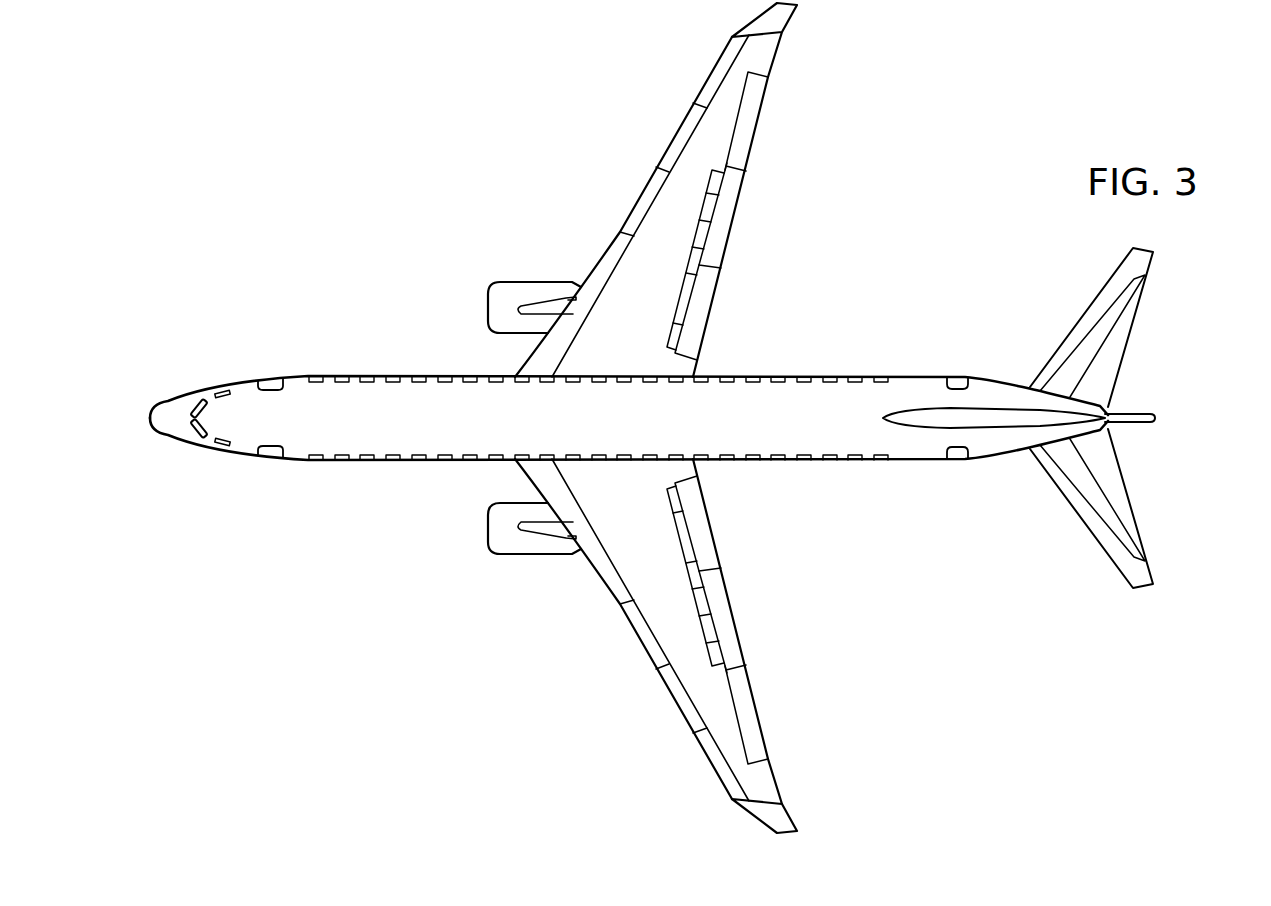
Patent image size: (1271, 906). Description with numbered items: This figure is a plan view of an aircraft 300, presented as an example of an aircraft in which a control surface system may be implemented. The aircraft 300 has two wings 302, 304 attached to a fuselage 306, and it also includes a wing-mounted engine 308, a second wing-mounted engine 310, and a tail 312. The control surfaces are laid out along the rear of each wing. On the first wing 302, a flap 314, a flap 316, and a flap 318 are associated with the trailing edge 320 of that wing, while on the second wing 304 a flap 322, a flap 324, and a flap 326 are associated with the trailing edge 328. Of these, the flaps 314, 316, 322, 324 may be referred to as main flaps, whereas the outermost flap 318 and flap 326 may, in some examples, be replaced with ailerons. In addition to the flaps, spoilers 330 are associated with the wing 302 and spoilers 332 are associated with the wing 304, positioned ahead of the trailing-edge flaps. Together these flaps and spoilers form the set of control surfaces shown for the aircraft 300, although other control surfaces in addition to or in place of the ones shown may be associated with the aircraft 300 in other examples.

The aircraft 300 is at (288, 189).
The wing 302 is at (708, 700).
The wing 304 is at (706, 136).
The fuselage 306 is at (647, 436).
The wing-mounted engine 308 is at (488, 543).
The wing-mounted engine 310 is at (488, 302).
The tail 312 is at (1138, 335).
The flap 314 is at (703, 527).
The flap 316 is at (727, 617).
The flap 318 is at (747, 702).
The trailing edge 320 is at (765, 778).
The flap 322 is at (705, 304).
The flap 324 is at (727, 216).
The flap 326 is at (752, 117).
The trailing edge 328 is at (767, 53).
The spoilers 330 is at (688, 603).
The spoilers 332 is at (688, 232).